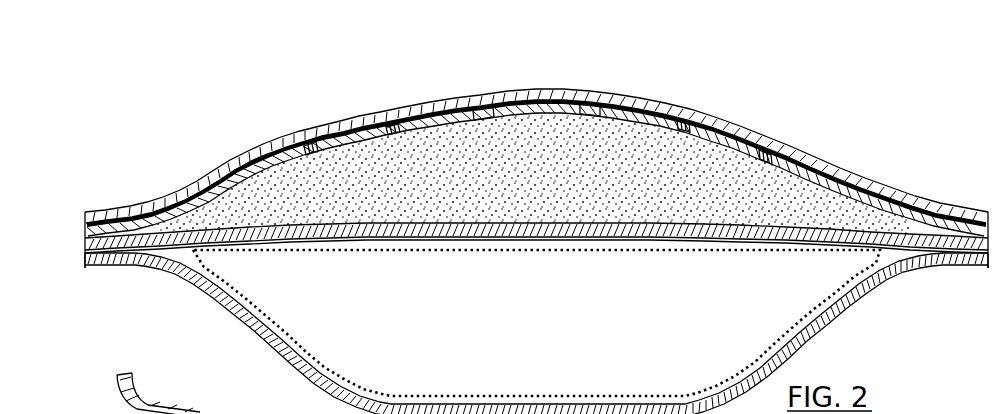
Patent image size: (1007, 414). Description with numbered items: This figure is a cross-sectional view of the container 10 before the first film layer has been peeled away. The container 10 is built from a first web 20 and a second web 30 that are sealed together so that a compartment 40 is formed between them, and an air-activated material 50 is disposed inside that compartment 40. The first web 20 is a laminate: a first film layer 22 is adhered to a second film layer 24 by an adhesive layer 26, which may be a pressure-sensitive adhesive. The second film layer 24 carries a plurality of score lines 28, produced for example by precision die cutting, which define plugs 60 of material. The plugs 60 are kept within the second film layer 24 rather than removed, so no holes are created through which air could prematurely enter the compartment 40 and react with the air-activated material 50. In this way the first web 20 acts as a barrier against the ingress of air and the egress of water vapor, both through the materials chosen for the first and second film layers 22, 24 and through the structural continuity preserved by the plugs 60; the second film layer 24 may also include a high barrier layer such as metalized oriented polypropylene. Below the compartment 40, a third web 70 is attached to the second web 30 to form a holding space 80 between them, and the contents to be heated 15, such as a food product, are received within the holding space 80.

The container 10 is at (515, 231).
The contents to be heated 15 is at (807, 310).
The first web 20 is at (521, 251).
The first film layer 22 is at (807, 152).
The second film layer 24 is at (885, 205).
The adhesive layer 26 is at (845, 177).
The score lines 28 is at (473, 109).
The second web 30 is at (515, 318).
The compartment 40 is at (717, 167).
The air-activated material 50 is at (531, 141).
The plugs 60 is at (311, 147).
The third web 70 is at (104, 267).
The holding space 80 is at (859, 285).